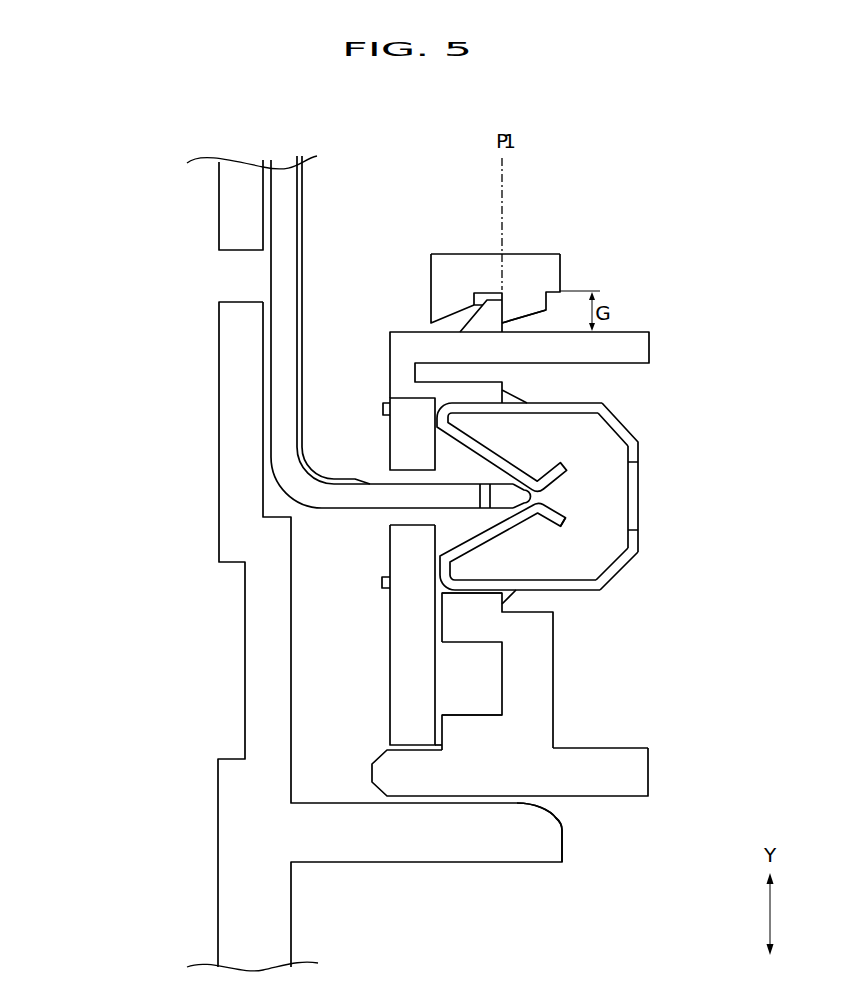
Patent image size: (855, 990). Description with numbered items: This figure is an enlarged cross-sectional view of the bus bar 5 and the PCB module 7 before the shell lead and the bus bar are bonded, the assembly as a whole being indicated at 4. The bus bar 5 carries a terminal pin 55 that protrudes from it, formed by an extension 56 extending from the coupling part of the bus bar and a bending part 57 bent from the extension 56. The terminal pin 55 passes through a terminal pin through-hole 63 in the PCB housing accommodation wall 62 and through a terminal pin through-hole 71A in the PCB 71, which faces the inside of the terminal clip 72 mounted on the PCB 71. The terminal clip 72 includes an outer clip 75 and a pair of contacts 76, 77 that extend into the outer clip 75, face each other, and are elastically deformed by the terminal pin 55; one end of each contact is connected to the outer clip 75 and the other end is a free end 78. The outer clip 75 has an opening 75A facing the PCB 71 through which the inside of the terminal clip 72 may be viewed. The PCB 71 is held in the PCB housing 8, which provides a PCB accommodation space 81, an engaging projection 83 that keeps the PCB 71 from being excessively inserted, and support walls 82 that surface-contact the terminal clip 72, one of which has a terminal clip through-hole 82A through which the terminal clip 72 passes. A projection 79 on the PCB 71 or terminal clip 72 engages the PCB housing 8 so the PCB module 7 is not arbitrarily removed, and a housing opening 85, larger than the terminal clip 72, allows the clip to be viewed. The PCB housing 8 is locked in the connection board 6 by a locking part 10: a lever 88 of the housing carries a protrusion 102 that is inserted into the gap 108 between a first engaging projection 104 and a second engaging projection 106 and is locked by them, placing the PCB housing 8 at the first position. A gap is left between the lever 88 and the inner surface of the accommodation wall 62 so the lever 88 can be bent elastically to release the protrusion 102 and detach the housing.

The connector assembly 4 is at (120, 175).
The bus bar 5 is at (290, 197).
The connection board 6 is at (228, 918).
The PCB module 7 is at (590, 520).
The PCB housing 8 is at (648, 773).
The locking part 10 is at (400, 312).
The terminal pin 55 is at (523, 497).
The extension 56 is at (285, 424).
The bending part 57 is at (360, 503).
The PCB housing accommodation wall 62 is at (560, 268).
The terminal pin through-hole 63 is at (395, 283).
The PCB 71 is at (407, 733).
The terminal pin through-hole 71A is at (410, 522).
The terminal clip 72 is at (615, 578).
The outer clip 75 is at (620, 560).
The opening 75A is at (635, 522).
The contact 76 is at (547, 458).
The contact 77 is at (640, 551).
The free end 78 is at (568, 517).
The projection 79 is at (507, 402).
The PCB accommodation space 81 is at (428, 752).
The support wall 82 is at (460, 390).
The terminal clip through-hole 82A is at (457, 590).
The engaging projection 83 is at (443, 730).
The housing opening 85 is at (617, 712).
The lever 88 is at (650, 347).
The protrusion 102 is at (498, 312).
The first engaging projection 104 is at (530, 305).
The second engaging projection 106 is at (450, 297).
The gap 108 is at (495, 295).